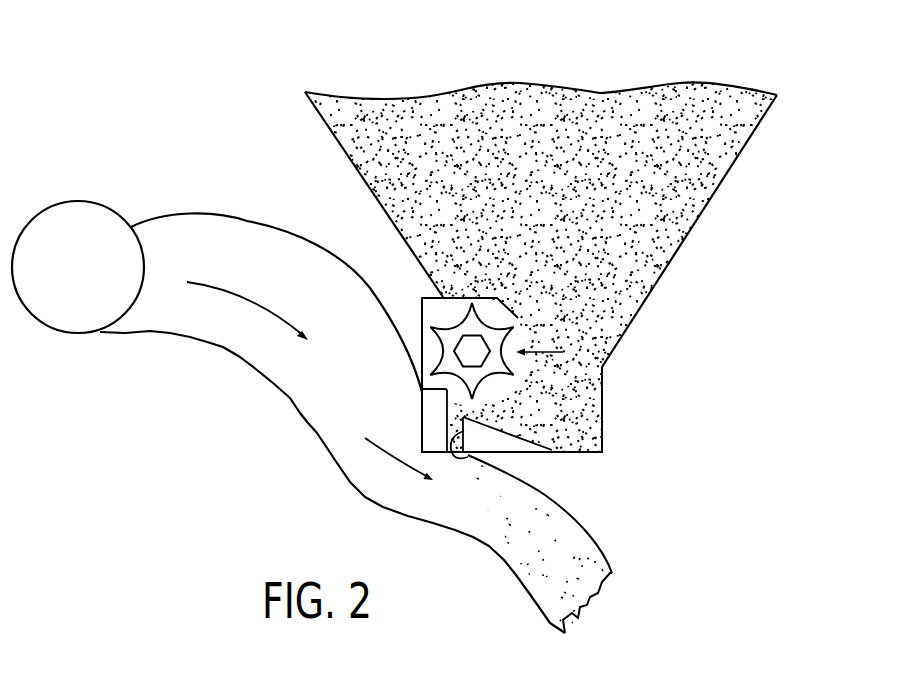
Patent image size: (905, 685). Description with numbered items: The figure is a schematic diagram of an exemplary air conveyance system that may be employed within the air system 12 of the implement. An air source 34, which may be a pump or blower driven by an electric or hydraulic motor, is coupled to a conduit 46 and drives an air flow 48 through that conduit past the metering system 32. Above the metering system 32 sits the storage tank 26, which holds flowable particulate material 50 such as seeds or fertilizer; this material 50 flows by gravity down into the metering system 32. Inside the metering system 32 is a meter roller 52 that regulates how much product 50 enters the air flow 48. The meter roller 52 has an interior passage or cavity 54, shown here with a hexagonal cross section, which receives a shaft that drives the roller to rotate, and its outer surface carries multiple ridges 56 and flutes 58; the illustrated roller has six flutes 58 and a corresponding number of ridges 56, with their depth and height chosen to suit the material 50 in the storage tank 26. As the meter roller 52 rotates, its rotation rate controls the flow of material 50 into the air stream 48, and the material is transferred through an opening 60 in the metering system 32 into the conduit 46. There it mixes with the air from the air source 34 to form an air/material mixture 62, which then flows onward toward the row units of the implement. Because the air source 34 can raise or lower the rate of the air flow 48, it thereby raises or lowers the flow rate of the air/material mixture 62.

The air system 12 is at (152, 74).
The storage tank 26 is at (336, 127).
The metering system 32 is at (400, 290).
The air source 34 is at (78, 201).
The conduit 46 is at (294, 400).
The air flow 48 is at (247, 298).
The flowable particulate material 50 is at (700, 188).
The meter roller 52 is at (553, 349).
The interior passage/cavity 54 is at (452, 378).
The ridges 56 is at (432, 323).
The flutes 58 is at (489, 315).
The opening 60 is at (474, 465).
The air/material mixture 62 is at (515, 549).